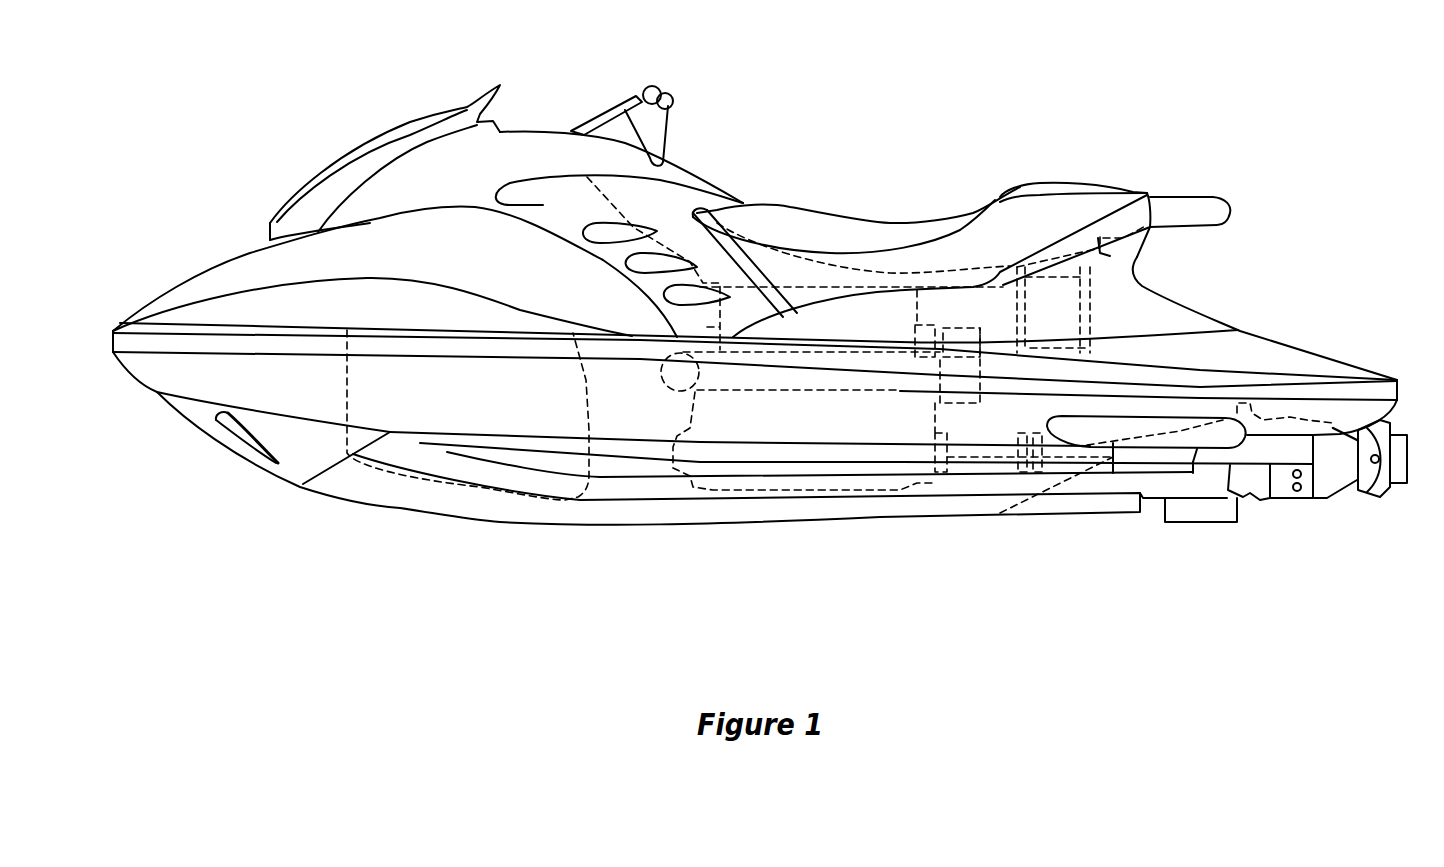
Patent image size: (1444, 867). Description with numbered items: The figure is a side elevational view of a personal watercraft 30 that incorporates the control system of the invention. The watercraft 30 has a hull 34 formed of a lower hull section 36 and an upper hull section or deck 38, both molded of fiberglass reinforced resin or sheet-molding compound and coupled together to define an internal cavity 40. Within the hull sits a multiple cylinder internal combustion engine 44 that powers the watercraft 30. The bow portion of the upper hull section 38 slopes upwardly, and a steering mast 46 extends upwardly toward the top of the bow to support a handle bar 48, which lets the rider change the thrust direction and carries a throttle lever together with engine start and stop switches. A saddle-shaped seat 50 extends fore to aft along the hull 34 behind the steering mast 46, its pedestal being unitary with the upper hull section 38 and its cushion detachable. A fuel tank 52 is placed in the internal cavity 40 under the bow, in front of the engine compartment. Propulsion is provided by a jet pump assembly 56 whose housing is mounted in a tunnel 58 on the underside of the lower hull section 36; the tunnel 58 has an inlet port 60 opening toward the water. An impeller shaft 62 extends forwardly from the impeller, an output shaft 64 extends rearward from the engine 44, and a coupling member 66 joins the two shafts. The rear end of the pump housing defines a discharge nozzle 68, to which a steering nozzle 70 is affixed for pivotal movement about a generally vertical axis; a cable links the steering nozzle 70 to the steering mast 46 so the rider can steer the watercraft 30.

The personal watercraft 30 is at (937, 158).
The hull 34 is at (207, 263).
The lower hull section 36 is at (205, 388).
The upper hull section 38 is at (188, 298).
The internal cavity 40 is at (653, 415).
The internal combustion engine 44 is at (793, 488).
The steering mast 46 is at (613, 110).
The handle bar 48 is at (680, 98).
The seat 50 is at (892, 233).
The fuel tank 52 is at (465, 473).
The jet pump assembly 56 is at (1253, 475).
The tunnel 58 is at (1177, 433).
The inlet port 60 is at (1118, 515).
The impeller shaft 62 is at (1073, 455).
The output shaft 64 is at (970, 458).
The coupling member 66 is at (1030, 473).
The discharge nozzle 68 is at (1325, 498).
The steering nozzle 70 is at (1363, 493).